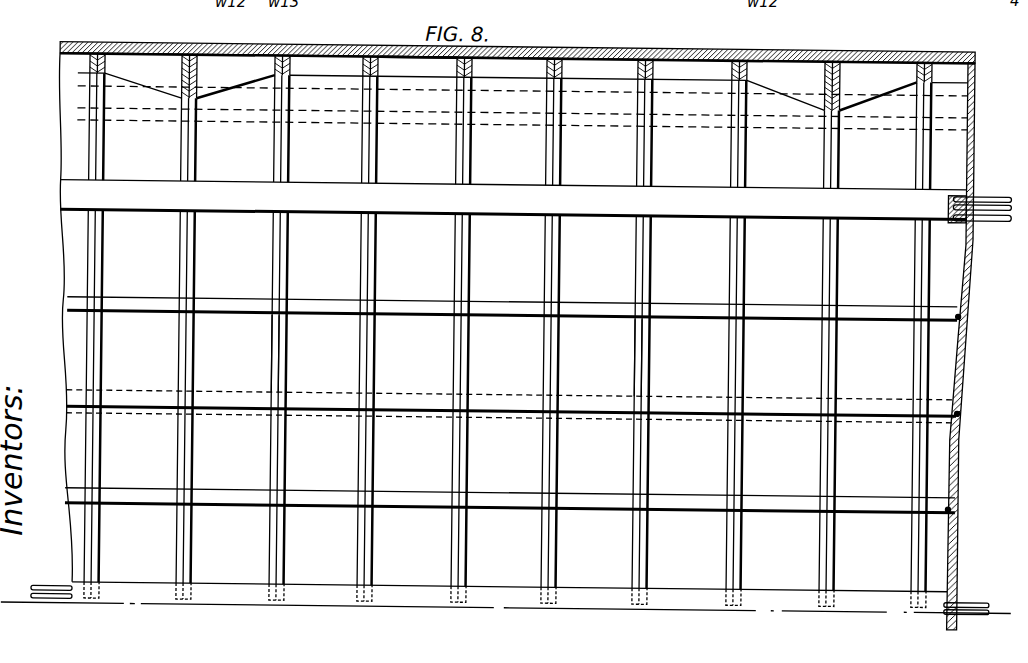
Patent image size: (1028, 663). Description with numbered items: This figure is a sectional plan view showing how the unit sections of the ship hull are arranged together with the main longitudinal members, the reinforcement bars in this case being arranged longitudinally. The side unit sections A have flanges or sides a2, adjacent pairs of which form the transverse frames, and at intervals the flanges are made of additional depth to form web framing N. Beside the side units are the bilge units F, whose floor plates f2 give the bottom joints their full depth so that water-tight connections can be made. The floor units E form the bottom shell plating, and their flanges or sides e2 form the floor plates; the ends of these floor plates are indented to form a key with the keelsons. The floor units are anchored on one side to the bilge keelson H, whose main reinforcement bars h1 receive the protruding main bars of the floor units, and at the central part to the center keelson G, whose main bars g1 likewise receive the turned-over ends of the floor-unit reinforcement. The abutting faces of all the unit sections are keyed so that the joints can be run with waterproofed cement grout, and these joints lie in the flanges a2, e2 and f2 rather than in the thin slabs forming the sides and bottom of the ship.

The unit section A is at (331, 59).
The flanges or sides a2 is at (455, 64).
The web framing N is at (182, 67).
The bilge units F is at (522, 123).
The floor plates f2 is at (192, 159).
The bilge keelson H is at (238, 186).
The main reinforcement bars h1 is at (989, 203).
The unit E is at (513, 405).
The flanges or sides e2 is at (277, 355).
The center keelson G is at (136, 585).
The main bars g1 is at (40, 590).